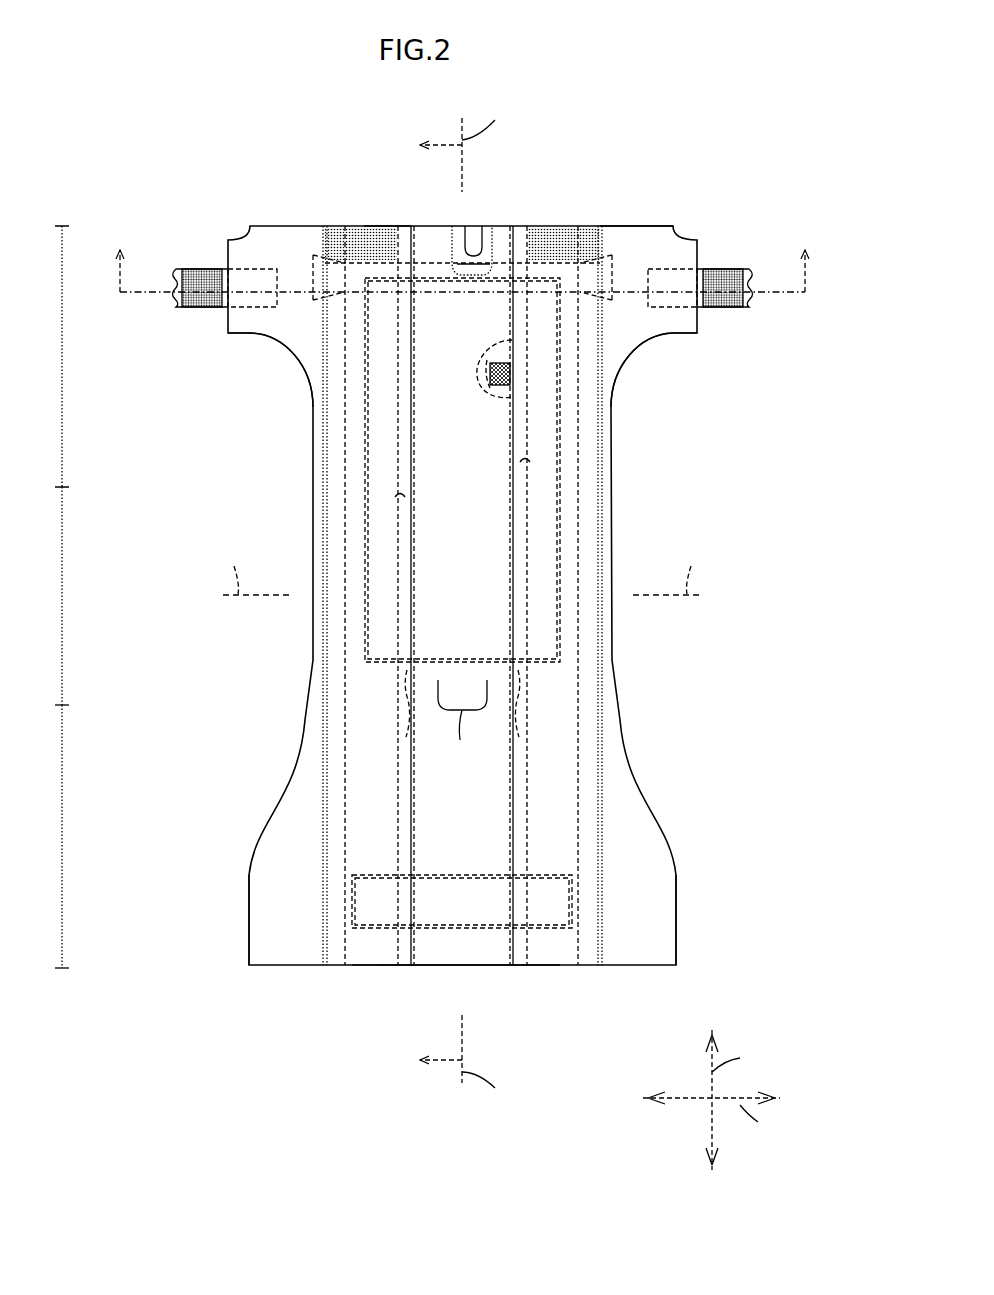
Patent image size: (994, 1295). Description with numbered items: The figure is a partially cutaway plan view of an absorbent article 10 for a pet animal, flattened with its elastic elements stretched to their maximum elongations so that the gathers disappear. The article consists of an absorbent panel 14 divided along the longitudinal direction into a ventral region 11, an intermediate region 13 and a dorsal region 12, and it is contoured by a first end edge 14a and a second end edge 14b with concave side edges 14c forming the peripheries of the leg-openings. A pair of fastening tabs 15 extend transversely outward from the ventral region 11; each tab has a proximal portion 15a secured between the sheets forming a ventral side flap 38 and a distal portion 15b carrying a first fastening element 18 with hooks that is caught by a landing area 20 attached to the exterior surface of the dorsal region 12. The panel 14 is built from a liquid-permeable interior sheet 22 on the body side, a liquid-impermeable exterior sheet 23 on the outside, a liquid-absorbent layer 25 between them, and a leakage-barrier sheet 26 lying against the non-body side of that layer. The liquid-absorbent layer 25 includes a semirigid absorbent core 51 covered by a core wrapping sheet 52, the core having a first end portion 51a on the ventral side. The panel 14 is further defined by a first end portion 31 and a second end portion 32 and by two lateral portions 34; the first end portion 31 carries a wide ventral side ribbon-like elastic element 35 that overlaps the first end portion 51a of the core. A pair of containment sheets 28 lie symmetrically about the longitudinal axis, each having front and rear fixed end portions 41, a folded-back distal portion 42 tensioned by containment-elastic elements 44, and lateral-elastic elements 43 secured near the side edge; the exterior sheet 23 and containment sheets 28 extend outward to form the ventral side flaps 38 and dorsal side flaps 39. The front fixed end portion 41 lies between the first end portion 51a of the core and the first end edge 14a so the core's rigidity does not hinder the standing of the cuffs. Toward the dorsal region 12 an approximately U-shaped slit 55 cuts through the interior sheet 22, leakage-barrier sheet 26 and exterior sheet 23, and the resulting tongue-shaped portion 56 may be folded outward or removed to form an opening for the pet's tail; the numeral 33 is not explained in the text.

The absorbent article 10 is at (423, 623).
The ventral region 11 is at (62, 352).
The dorsal region 12 is at (62, 830).
The intermediate region 13 is at (62, 585).
The absorbent panel 14 is at (298, 224).
The first end edge 14a is at (584, 240).
The second end edge 14b is at (488, 968).
The side edge 14c is at (292, 362).
The fastening tab 15 is at (462, 270).
The proximal portion 15a is at (250, 285).
The distal portion of fastening tab 15b is at (178, 290).
The first fastening element 18 is at (196, 309).
The landing area 20 is at (548, 905).
The interior sheet 22 is at (487, 778).
The exterior sheet 23 is at (472, 232).
The liquid-absorbent layer 25 is at (591, 427).
The leakage-barrier sheet 26 is at (504, 210).
The containment sheet 28 is at (355, 605).
The first end portion 31 is at (389, 236).
The second end portion 32 is at (380, 970).
The fold portion 33 is at (458, 237).
The lateral portion 34 is at (365, 745).
The ventral side ribbon-like elastic element 35 is at (550, 270).
The ventral side flap 38 is at (273, 332).
The dorsal side flap 39 is at (268, 918).
The front and rear fixed end portions 41 is at (357, 235).
The distal portion 42 is at (405, 547).
The lateral-elastic elements 43 is at (327, 690).
The containment-elastic elements 44 is at (513, 462).
The absorbent core 51 is at (493, 388).
The first end portion of absorbent core 51a is at (433, 283).
The core wrapping sheet 52 is at (485, 388).
The slit 55 is at (460, 741).
The tongue-shaped portion 56 is at (485, 688).